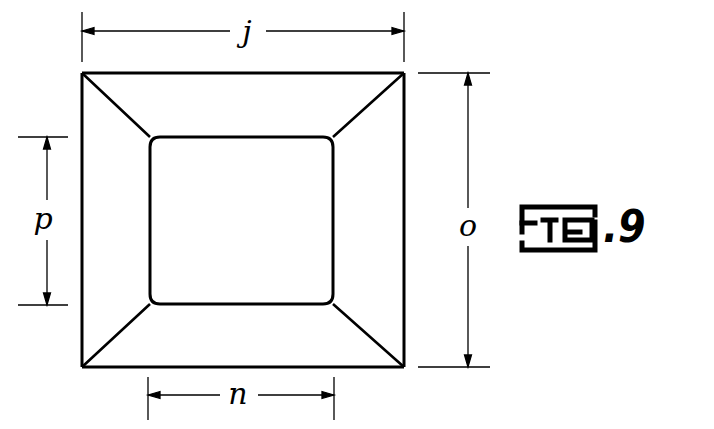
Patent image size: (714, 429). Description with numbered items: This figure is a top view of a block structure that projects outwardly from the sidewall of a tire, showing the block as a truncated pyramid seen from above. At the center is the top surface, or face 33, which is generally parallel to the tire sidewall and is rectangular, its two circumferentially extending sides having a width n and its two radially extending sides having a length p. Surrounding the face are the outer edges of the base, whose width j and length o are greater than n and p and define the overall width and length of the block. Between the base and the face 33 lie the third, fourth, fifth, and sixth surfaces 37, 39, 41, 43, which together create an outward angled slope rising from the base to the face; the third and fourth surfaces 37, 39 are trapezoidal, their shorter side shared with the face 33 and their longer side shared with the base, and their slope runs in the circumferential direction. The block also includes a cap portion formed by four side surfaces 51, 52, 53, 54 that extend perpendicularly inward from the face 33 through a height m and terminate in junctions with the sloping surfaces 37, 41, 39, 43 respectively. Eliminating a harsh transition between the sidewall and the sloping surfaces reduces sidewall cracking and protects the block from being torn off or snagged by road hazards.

The face 33 is at (244, 220).
The third surface 37 is at (365, 275).
The fourth surface 39 is at (100, 125).
The fifth surface 41 is at (295, 100).
The sixth surface 43 is at (146, 340).
The side surface 51 is at (336, 184).
The side surface 52 is at (212, 135).
The side surface 53 is at (148, 236).
The side surface 54 is at (272, 310).